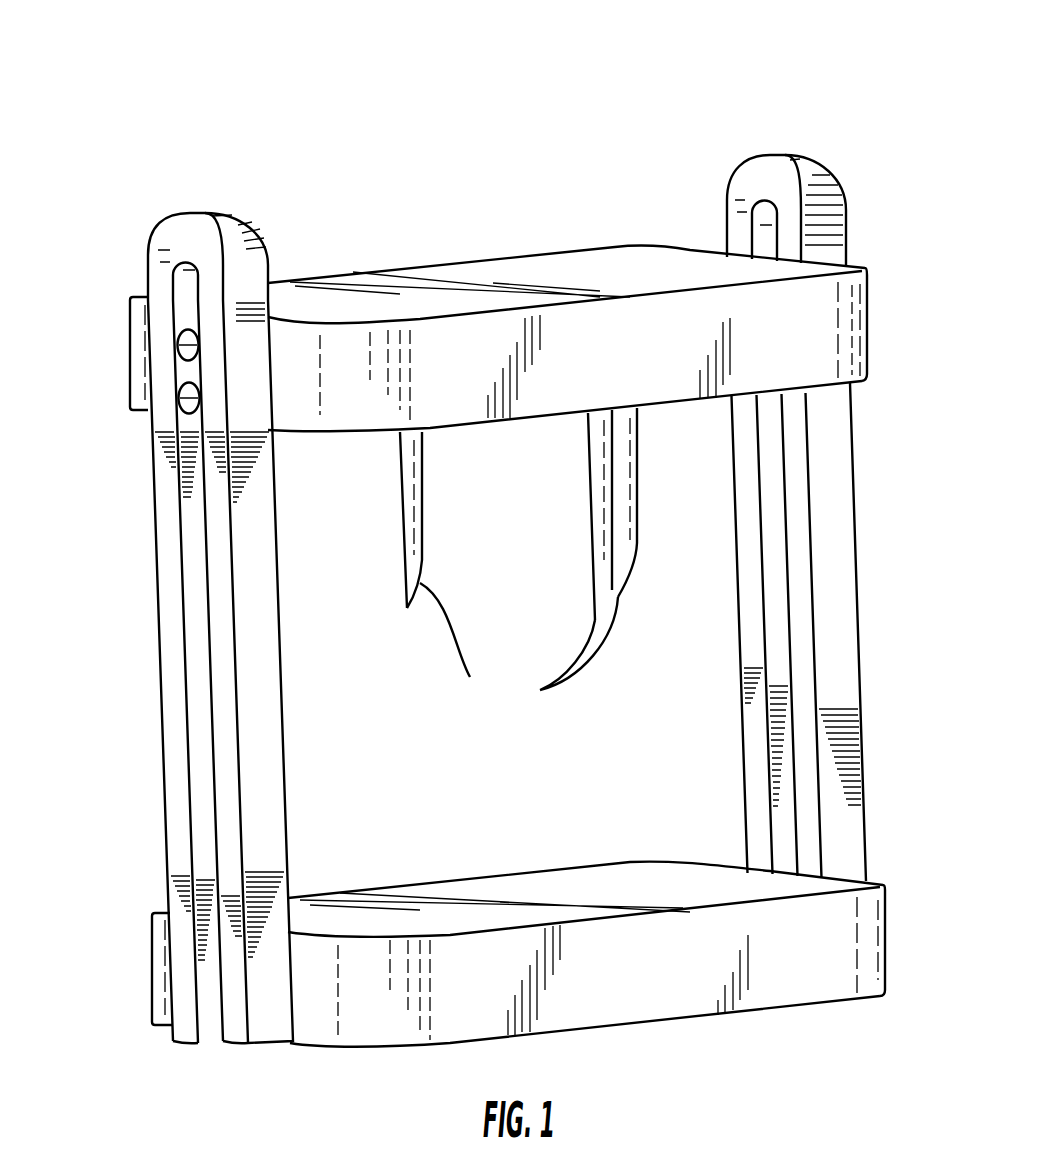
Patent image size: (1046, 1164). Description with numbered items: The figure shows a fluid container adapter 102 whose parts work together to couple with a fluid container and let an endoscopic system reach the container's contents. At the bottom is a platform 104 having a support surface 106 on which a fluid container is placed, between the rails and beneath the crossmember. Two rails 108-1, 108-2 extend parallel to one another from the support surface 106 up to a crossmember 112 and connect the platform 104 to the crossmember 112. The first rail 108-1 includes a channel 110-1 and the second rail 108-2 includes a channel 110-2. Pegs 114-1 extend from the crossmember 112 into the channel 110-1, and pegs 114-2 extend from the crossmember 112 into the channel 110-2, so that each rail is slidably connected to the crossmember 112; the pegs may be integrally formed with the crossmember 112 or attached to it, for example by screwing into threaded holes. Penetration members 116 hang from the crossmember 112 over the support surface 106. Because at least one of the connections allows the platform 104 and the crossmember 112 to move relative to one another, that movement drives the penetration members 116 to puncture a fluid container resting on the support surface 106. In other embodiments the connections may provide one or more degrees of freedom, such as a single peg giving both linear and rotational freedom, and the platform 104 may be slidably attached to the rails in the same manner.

The fluid container adapter 102 is at (318, 57).
The platform 104 is at (315, 1046).
The support surface 106 is at (560, 893).
The rail 108-1 is at (127, 632).
The rail 108-2 is at (890, 640).
The channel 110-1 is at (205, 757).
The channel 110-2 is at (778, 813).
The crossmember 112 is at (585, 245).
The pegs 114-1 is at (183, 397).
The pegs 114-2 is at (891, 274).
The penetration members 116 is at (470, 677).